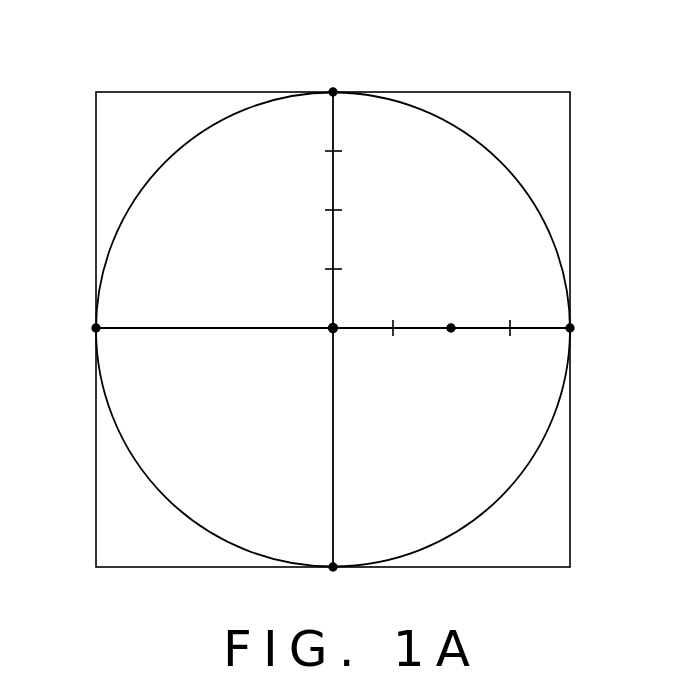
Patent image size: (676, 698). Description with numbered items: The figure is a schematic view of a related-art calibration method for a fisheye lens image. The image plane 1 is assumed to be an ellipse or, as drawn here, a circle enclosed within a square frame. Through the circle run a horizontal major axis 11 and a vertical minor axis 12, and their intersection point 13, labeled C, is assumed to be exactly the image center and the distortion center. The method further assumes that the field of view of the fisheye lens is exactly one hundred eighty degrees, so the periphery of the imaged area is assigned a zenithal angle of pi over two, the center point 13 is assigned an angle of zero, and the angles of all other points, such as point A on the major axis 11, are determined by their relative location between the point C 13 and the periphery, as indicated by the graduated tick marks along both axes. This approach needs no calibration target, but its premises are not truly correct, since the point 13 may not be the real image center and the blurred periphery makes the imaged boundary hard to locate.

The image plane 1 is at (432, 137).
The major axis 11 is at (542, 328).
The minor axis 12 is at (332, 117).
The intersection point 13 is at (330, 330).